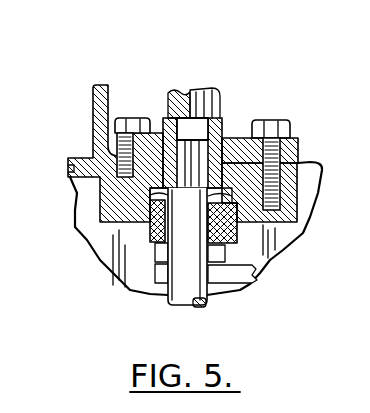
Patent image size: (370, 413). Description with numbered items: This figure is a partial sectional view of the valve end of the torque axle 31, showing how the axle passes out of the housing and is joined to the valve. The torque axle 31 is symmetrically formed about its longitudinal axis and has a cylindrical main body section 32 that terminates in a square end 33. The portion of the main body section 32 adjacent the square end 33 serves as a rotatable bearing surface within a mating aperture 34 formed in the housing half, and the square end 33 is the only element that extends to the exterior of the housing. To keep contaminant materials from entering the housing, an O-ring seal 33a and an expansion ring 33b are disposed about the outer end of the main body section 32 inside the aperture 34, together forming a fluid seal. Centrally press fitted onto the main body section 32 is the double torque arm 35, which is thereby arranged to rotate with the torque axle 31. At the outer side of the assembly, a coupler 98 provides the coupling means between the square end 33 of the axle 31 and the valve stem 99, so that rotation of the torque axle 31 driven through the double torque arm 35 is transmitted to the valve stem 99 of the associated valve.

The torque axle 31 is at (185, 288).
The cylindrical main body section 32 is at (198, 307).
The square end 33 is at (224, 145).
The O-ring seal 33a is at (150, 205).
The expansion ring 33b is at (110, 224).
The mating aperture 34 is at (108, 193).
The double torque arm 35 is at (244, 278).
The coupler 98 is at (221, 130).
The valve stem 99 is at (165, 116).